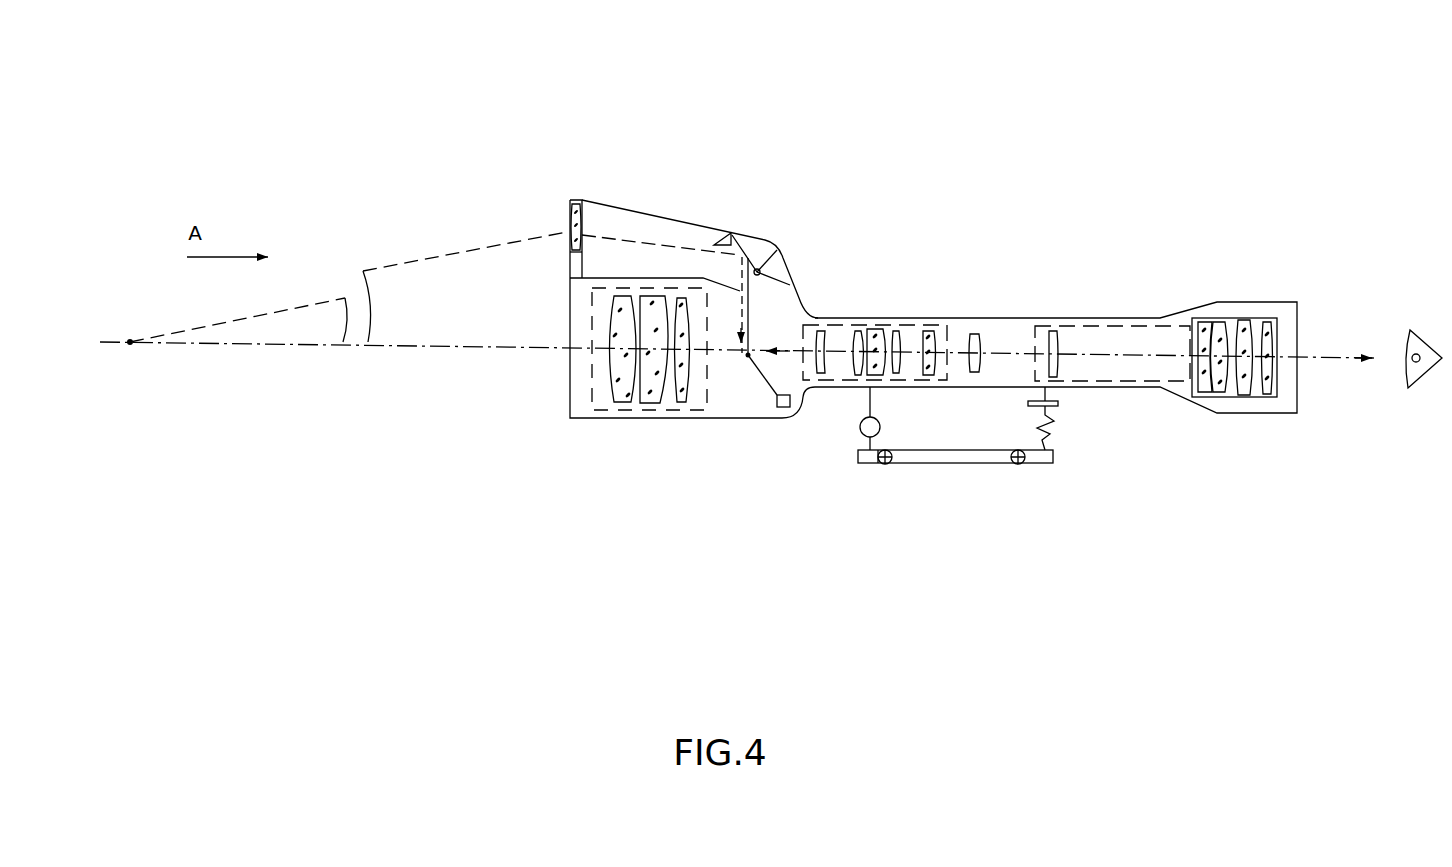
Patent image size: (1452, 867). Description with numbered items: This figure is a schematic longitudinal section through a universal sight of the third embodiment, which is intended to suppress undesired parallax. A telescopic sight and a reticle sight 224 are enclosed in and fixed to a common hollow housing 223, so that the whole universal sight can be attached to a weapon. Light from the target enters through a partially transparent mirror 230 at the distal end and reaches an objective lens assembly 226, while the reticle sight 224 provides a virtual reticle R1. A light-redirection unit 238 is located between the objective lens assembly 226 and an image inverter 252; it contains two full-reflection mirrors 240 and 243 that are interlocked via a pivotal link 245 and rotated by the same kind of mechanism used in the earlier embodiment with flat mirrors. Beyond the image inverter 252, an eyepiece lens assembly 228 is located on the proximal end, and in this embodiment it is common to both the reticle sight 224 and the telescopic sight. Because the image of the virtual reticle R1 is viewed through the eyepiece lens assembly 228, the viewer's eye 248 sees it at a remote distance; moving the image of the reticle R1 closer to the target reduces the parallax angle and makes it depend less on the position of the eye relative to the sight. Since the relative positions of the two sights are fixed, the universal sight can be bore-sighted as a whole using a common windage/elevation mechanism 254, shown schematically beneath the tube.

The partially transparent mirror 230 is at (571, 219).
The virtual reticle R1 is at (585, 232).
The reticle sight 224 is at (648, 234).
The common hollow housing 223 is at (698, 230).
The full-reflection mirror 240 is at (724, 237).
The light-redirection unit 238 is at (855, 176).
The image inverter 252 is at (880, 327).
The eyepiece lens assembly 228 is at (1266, 294).
The viewer's eye 248 is at (1423, 345).
The objective lens assembly 226 is at (610, 380).
The pivotal link 245 is at (742, 318).
The full-reflection mirror 243 is at (760, 376).
The windage/elevation mechanism 254 is at (858, 457).